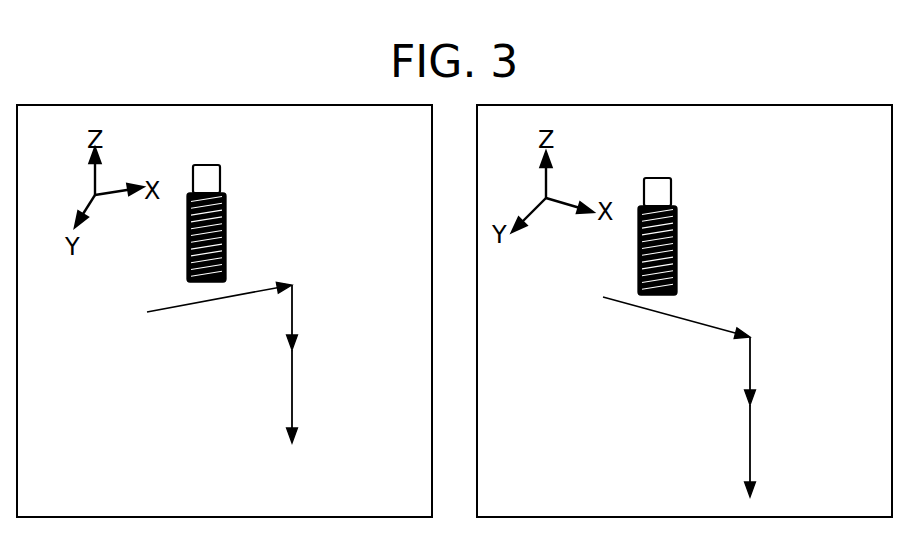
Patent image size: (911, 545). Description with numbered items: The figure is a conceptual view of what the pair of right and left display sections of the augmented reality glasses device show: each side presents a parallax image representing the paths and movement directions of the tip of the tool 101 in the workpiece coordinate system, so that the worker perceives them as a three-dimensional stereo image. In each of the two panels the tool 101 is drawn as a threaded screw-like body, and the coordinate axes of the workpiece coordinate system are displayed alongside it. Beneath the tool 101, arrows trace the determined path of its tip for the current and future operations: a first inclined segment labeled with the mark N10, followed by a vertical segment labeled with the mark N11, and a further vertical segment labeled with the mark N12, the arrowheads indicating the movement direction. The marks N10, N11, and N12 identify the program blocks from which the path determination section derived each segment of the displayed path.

The tool 101 is at (218, 182).
The mark for identifying program block N10 is at (448, 315).
The mark for identifying program block N11 is at (550, 345).
The mark for identifying program block N12 is at (550, 423).